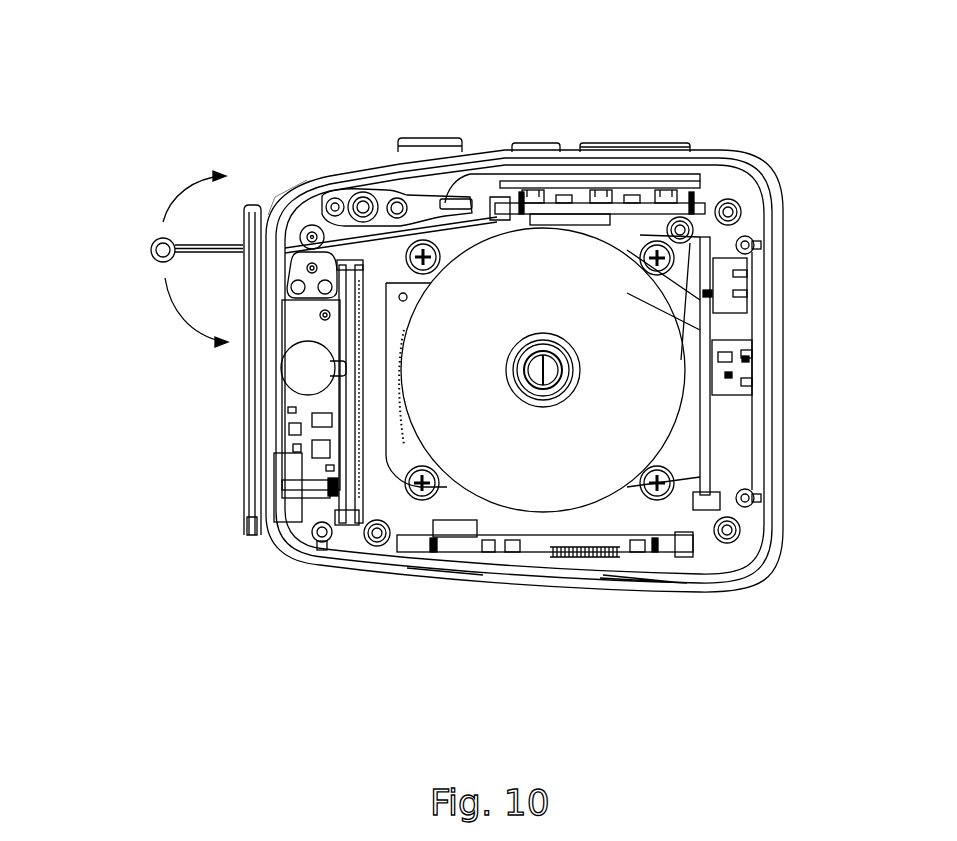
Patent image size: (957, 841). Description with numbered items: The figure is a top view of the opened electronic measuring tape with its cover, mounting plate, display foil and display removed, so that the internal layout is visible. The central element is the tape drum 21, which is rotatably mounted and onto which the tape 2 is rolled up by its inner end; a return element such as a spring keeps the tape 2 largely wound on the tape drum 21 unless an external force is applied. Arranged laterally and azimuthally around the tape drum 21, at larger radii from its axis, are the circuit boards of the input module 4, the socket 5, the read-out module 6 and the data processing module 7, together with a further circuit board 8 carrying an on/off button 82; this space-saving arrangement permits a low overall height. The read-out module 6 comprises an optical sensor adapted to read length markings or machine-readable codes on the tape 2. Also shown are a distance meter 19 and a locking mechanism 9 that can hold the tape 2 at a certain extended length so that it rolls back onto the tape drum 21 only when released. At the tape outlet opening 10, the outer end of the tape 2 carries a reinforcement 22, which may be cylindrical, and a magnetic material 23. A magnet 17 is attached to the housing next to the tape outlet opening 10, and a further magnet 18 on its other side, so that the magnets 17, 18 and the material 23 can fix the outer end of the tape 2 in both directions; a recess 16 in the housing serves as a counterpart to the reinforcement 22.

The tape 2 is at (470, 223).
The input module 4 is at (532, 185).
The socket 5 is at (748, 361).
The read-out module 6 is at (607, 212).
The data processing module 7 is at (577, 553).
The further circuit board 8 is at (358, 428).
The locking mechanism 9 is at (312, 235).
The tape outlet opening 10 is at (243, 245).
The recess 16 is at (292, 350).
The magnet 17 is at (275, 200).
The further magnet 18 is at (277, 273).
The distance meter 19 is at (297, 390).
The tape drum 21 is at (622, 318).
The reinforcement 22 is at (152, 248).
The magnetic material 23 is at (203, 256).
The on/off button 82 is at (288, 495).